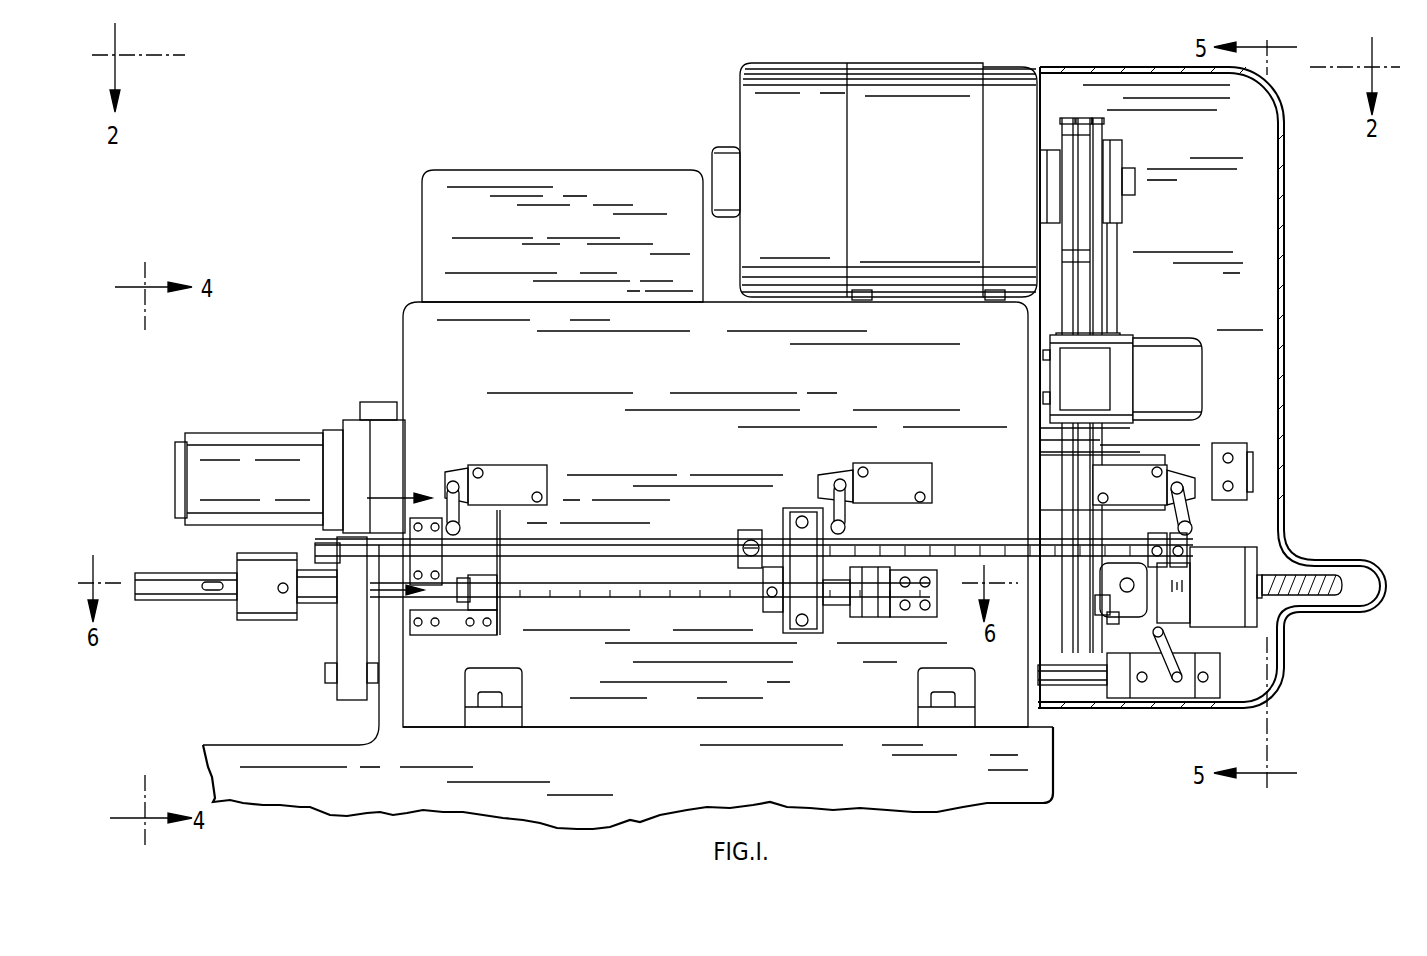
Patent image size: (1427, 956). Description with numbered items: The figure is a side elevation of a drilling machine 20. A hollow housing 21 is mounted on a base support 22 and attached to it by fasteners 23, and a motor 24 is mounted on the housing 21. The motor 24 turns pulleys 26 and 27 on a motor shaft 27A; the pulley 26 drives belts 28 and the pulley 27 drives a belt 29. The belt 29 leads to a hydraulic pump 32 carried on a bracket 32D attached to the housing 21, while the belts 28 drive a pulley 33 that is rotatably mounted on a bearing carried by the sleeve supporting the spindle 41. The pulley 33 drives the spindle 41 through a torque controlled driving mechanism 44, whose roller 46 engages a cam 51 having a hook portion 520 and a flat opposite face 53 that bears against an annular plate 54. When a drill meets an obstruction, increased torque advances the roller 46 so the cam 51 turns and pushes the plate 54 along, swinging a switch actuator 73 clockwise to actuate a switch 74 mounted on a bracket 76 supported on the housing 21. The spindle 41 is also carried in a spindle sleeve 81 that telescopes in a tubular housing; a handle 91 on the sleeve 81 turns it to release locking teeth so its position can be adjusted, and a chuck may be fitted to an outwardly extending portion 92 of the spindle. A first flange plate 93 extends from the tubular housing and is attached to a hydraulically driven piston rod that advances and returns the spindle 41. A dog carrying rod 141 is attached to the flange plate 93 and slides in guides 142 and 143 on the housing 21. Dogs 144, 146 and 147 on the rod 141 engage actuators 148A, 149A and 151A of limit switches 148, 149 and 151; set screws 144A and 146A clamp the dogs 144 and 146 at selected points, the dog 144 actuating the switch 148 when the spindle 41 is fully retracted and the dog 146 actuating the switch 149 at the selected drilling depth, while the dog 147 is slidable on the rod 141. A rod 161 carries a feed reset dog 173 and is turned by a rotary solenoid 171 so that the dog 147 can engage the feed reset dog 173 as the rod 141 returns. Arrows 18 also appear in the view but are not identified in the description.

The direction arrows 18 is at (408, 543).
The drilling machine 20 is at (385, 334).
The hollow housing 21 is at (403, 372).
The base support 22 is at (1034, 806).
The fasteners 23 is at (500, 697).
The motor 24 is at (757, 118).
The pulley 26 is at (1097, 117).
The pulley 27 is at (1124, 155).
The motor shaft 27A is at (1136, 184).
The belts 28 is at (1086, 117).
The belt 29 is at (1118, 288).
The hydraulic pump 32 is at (1163, 337).
The bracket 32D is at (1050, 372).
The pulley 33 is at (1118, 617).
The spindle 41 is at (1344, 585).
The torque controlled driving mechanism 44 is at (1232, 615).
The roller 46 is at (1112, 598).
The cam 51 is at (1114, 624).
The flat opposite face 53 is at (1226, 630).
The plate 54 is at (1128, 700).
The switch actuator 73 is at (1172, 683).
The switch 74 is at (1258, 703).
The bracket 76 is at (1117, 700).
The spindle sleeve 81 is at (314, 604).
The handle 91 is at (281, 592).
The outwardly extending portion 92 is at (184, 588).
The first flange plate 93 is at (337, 690).
The dog carrying rod 141 is at (716, 550).
The guide 142 is at (442, 562).
The guide 143 is at (786, 523).
The dog 144 is at (1275, 598).
The set screw 144A is at (1262, 600).
The dog 146 is at (1162, 540).
The set screw 146A is at (1182, 540).
The dog 147 is at (748, 532).
The limit switch 148 is at (1093, 482).
The actuator 148A is at (1190, 533).
The limit switch 149 is at (932, 470).
The actuator 149A is at (846, 528).
The limit switch 151 is at (475, 466).
The actuator 151A is at (456, 522).
The rod 161 is at (530, 598).
The rotary solenoid 171 is at (880, 618).
The feed reset dog 173 is at (764, 605).
The hook portion 520 is at (1100, 583).